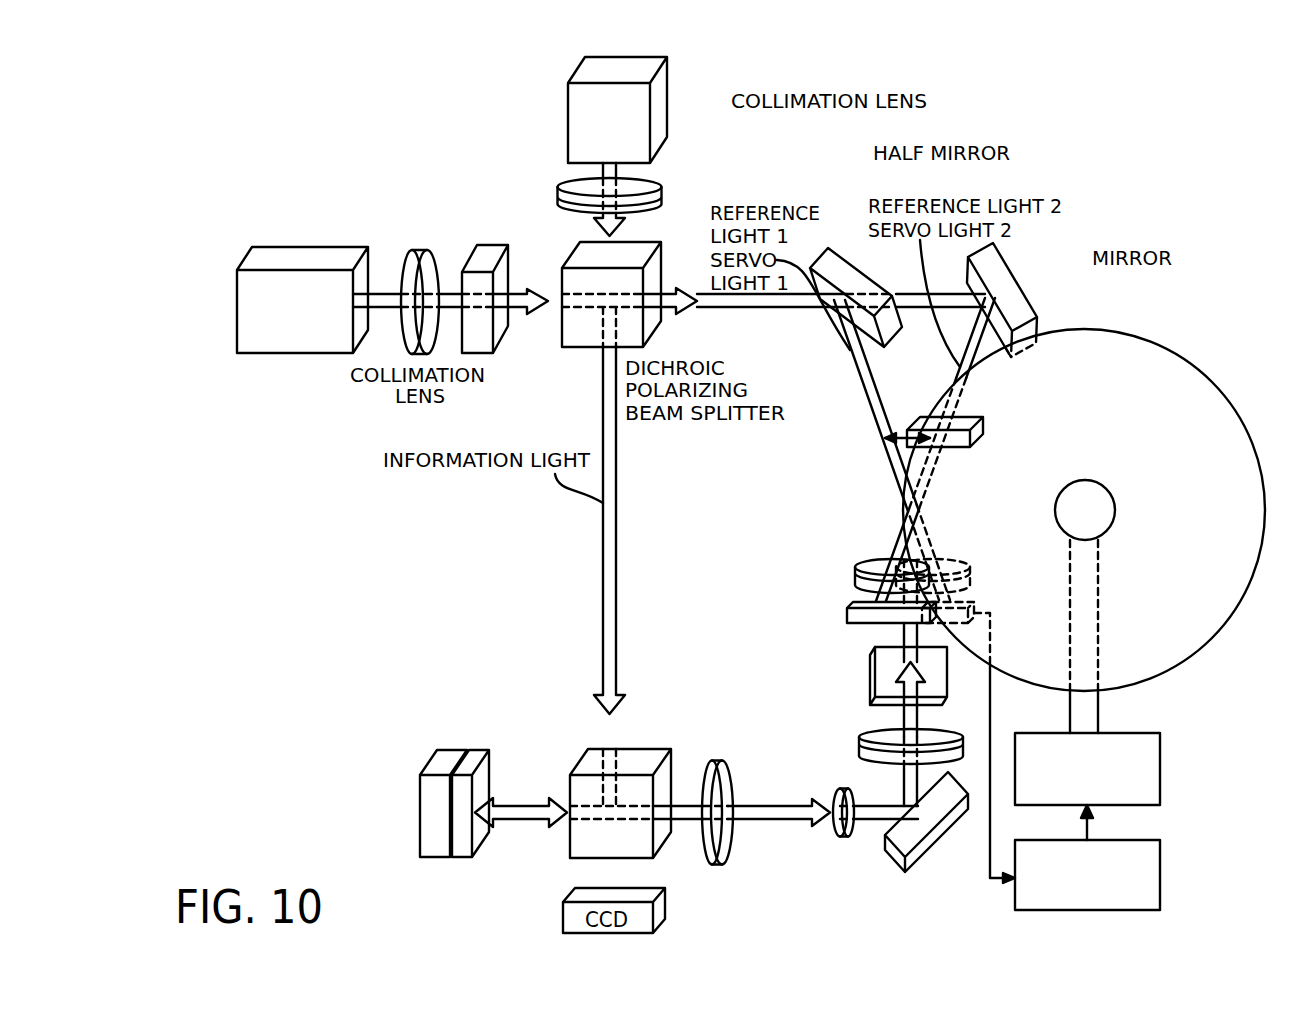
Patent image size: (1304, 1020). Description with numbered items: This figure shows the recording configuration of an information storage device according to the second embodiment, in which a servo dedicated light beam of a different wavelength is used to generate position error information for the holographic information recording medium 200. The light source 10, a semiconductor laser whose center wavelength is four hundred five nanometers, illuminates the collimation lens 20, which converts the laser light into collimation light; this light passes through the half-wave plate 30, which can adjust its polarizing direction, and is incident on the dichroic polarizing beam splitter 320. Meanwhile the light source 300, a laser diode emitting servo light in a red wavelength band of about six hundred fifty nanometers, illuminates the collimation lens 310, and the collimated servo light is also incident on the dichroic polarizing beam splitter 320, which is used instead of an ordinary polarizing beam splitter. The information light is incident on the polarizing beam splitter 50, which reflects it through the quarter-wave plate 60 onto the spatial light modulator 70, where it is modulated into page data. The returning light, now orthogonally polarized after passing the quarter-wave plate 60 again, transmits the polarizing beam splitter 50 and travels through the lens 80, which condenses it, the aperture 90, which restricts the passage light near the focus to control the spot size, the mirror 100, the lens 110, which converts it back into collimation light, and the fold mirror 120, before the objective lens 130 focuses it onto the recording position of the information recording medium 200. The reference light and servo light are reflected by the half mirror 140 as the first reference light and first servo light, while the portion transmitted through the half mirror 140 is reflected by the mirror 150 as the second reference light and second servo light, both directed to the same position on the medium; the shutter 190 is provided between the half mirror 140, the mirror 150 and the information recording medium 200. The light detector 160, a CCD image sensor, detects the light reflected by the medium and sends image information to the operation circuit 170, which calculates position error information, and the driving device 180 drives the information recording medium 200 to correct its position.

The light source (ECLD) 10 is at (320, 247).
The collimation lens 20 is at (420, 249).
The λ/2 plate (HWP) 30 is at (492, 246).
The polarizing beam splitter (PBS2) 50 is at (597, 749).
The λ/4 plate (QWP) 60 is at (482, 750).
The spatial light modulator (SLM) 70 is at (445, 750).
The lens 80 is at (718, 865).
The aperture 90 is at (842, 840).
The mirror 100 is at (938, 840).
The lens 110 is at (860, 741).
The fold mirror 120 is at (873, 683).
The objective lens 130 is at (853, 578).
The half mirror 140 is at (846, 259).
The mirror 150 is at (1022, 292).
The light detector 160 is at (847, 618).
The operation circuit 170 is at (1162, 875).
The driving device 180 is at (1162, 768).
The shutter 190 is at (907, 447).
The information recording medium 200 is at (1181, 354).
The light source (LD) 300 is at (567, 113).
The collimation lens 310 is at (655, 178).
The dichroic polarizing beam splitter (PBS) 320 is at (663, 270).